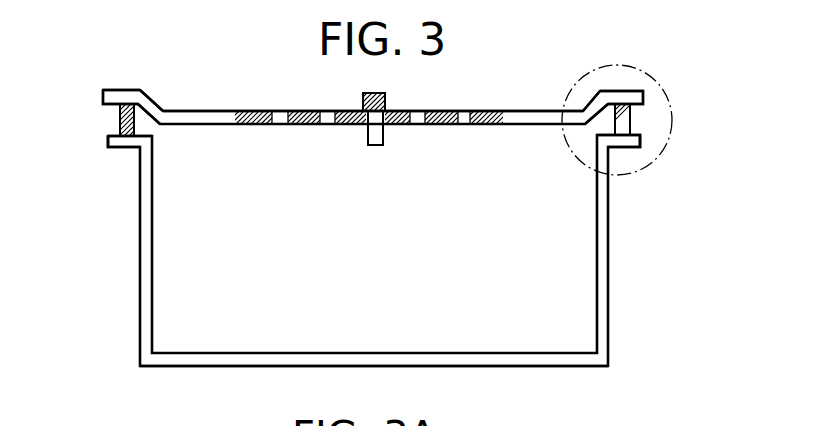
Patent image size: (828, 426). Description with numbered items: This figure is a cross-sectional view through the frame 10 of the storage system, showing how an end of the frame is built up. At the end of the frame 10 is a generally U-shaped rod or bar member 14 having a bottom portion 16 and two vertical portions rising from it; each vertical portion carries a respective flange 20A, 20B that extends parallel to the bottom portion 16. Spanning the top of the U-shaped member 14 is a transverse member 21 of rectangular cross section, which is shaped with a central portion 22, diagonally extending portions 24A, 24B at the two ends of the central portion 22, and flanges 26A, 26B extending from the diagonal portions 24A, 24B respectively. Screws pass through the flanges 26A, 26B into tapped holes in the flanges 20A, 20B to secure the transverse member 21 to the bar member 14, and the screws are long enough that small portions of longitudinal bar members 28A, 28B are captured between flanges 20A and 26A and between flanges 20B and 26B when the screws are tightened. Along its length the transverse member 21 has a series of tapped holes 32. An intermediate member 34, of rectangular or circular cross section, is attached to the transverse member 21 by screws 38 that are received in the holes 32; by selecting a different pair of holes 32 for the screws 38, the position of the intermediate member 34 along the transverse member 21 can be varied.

The frame 10 is at (263, 74).
The U-shaped rod or bar member 14 is at (186, 382).
The bottom portion 16 is at (500, 368).
The flange 20A is at (110, 141).
The flange 20B is at (640, 143).
The transverse member 21 is at (488, 99).
The central portion 22 is at (307, 124).
The diagonally extending portion 24A is at (158, 101).
The diagonally extending portion 24B is at (600, 92).
The flange 26A is at (104, 96).
The flange 26B is at (643, 97).
The longitudinal bar member 28A is at (119, 121).
The longitudinal bar member 28B is at (631, 120).
The tapped holes 32 is at (466, 124).
The intermediate member 34 is at (386, 100).
The screws 38 is at (372, 93).